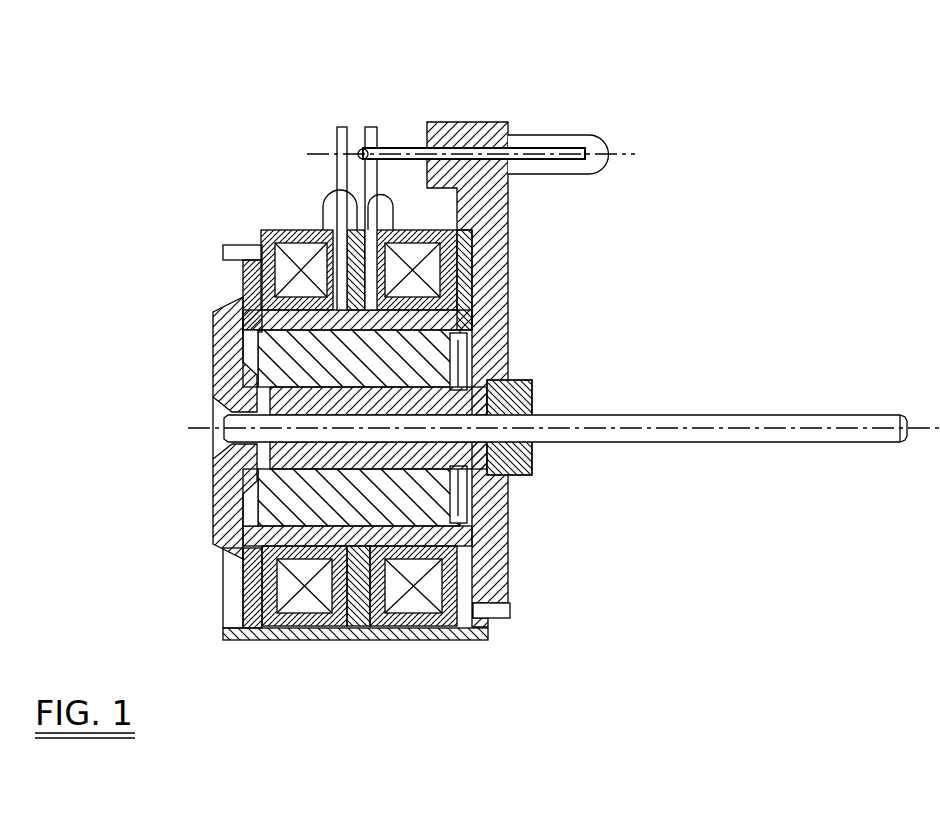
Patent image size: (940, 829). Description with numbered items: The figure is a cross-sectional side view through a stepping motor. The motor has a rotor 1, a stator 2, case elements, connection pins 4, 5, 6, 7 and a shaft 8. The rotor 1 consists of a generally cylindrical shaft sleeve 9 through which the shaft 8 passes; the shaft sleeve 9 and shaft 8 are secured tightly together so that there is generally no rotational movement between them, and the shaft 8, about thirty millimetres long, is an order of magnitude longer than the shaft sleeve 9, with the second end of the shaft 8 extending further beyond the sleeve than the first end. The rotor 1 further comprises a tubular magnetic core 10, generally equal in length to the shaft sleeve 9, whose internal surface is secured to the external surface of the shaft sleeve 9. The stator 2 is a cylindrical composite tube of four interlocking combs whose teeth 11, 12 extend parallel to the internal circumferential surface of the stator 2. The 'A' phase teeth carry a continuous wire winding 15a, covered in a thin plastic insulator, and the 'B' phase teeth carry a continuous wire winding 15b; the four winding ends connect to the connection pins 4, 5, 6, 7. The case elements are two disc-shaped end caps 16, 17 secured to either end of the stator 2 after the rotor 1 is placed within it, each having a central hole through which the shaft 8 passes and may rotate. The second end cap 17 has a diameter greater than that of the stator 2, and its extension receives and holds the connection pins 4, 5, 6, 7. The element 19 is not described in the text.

The rotor 1 is at (155, 337).
The stator 2 is at (372, 685).
The connection pin 4 is at (540, 150).
The connection pin 5 is at (474, 153).
The connection pin 6 is at (474, 153).
The connection pin 7 is at (474, 153).
The shaft 8 is at (796, 430).
The shaft sleeve 9 is at (502, 372).
The magnetic core 10 is at (333, 343).
The teeth 11 is at (377, 133).
The teeth 12 is at (318, 642).
The wire winding 15a is at (303, 250).
The wire winding 15b is at (433, 268).
The end cap 16 is at (218, 318).
The second end cap 17 is at (508, 543).
The coil former 19 is at (423, 642).